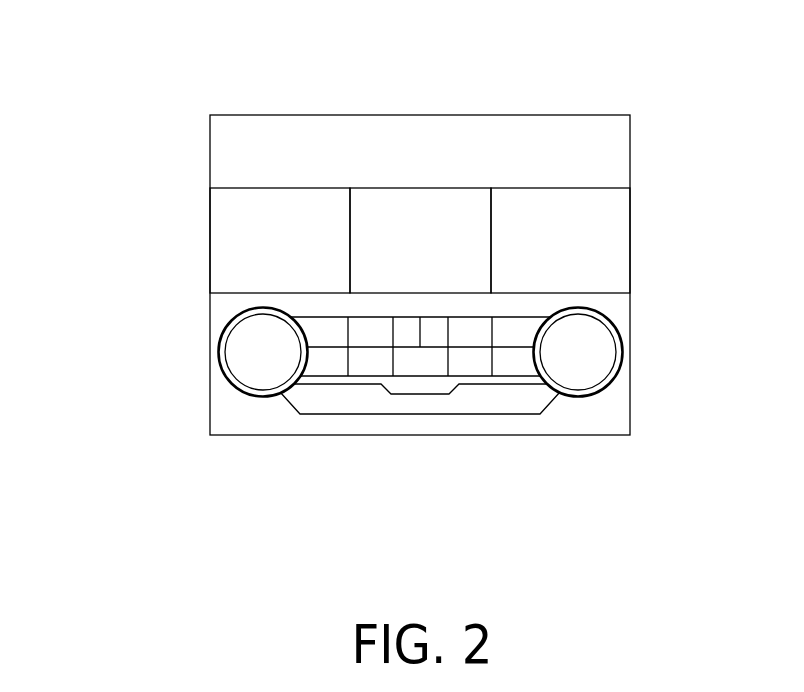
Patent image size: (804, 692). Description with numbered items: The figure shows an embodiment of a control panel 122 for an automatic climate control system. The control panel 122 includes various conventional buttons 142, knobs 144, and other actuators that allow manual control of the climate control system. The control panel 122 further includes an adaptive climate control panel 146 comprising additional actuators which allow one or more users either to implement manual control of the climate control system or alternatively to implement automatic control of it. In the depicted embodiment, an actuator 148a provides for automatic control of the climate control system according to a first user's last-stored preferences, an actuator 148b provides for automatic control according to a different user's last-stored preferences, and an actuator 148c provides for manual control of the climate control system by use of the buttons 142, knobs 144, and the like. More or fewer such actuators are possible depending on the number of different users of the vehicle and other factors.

The control panel 122 is at (150, 76).
The buttons 142 is at (413, 396).
The knobs 144 is at (217, 354).
The adaptive climate control panel 146 is at (344, 212).
The actuator 148a is at (273, 203).
The actuator 148b is at (413, 203).
The actuator 148c is at (553, 203).